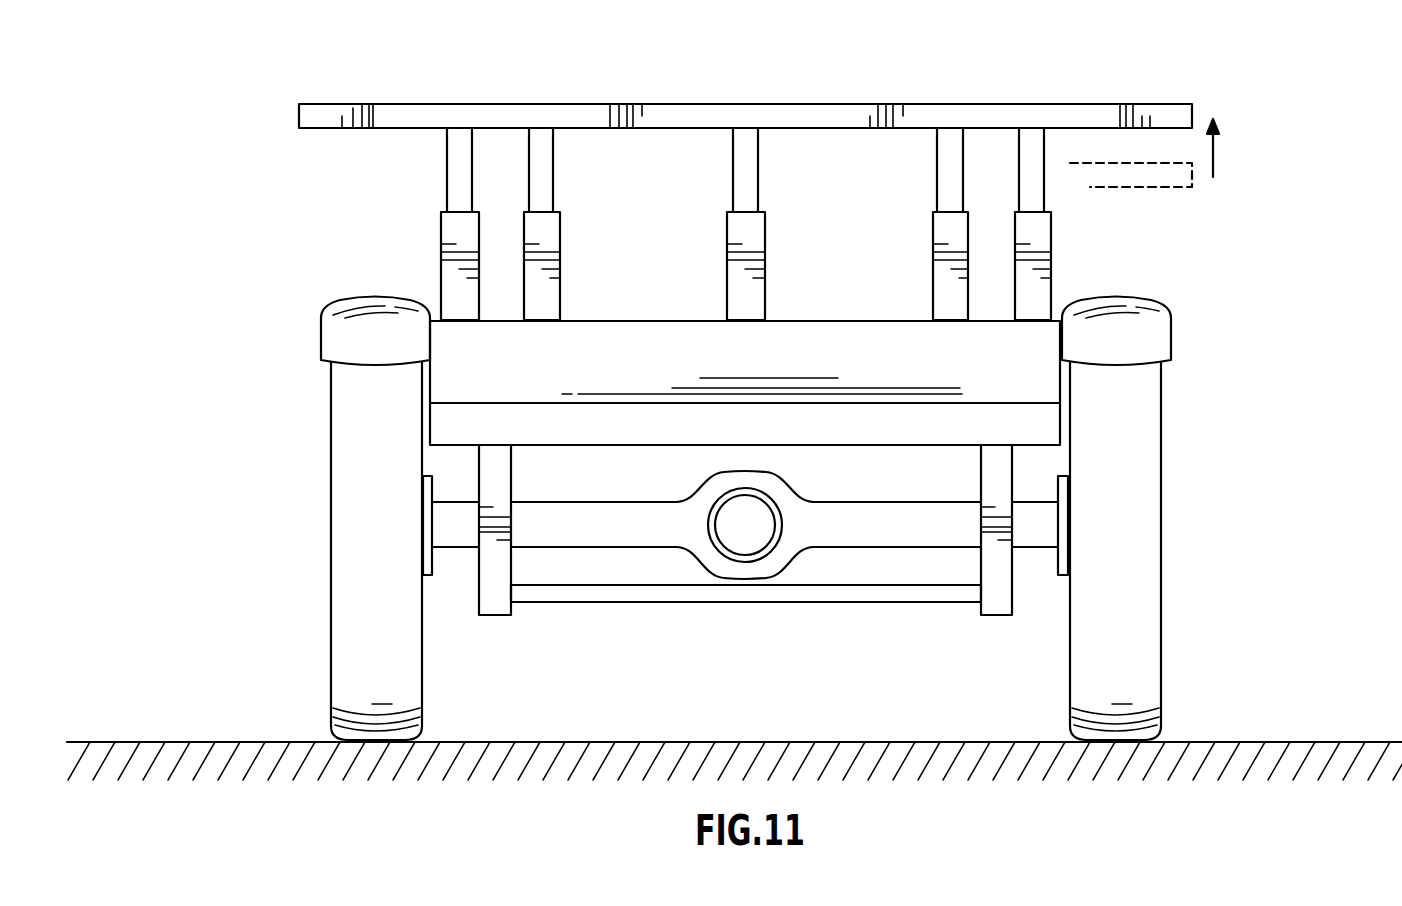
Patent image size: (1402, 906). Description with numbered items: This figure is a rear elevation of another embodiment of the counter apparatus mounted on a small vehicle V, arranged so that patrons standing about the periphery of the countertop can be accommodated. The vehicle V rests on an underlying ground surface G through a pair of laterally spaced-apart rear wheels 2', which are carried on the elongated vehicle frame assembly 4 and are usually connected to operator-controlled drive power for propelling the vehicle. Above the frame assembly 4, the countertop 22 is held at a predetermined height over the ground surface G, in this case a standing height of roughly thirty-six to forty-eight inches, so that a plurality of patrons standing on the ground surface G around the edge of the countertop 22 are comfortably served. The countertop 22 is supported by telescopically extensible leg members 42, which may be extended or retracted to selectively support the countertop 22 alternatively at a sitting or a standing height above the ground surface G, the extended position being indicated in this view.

The countertop 22 is at (824, 112).
The telescopically extensible leg members 42 is at (441, 232).
The rear wheels 2' is at (744, 519).
The vehicle frame assembly 4 is at (495, 617).
The vehicle V is at (728, 622).
The ground surface G is at (900, 740).